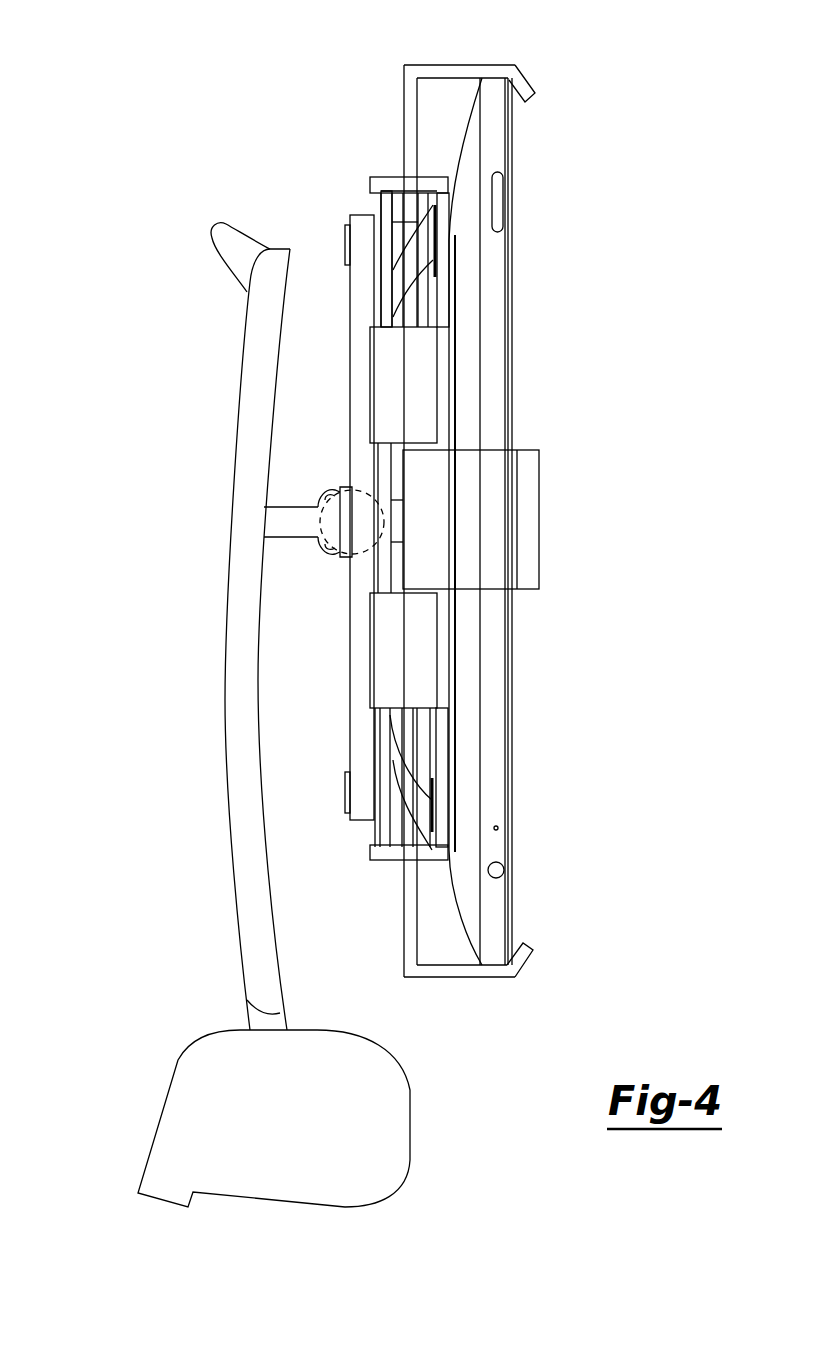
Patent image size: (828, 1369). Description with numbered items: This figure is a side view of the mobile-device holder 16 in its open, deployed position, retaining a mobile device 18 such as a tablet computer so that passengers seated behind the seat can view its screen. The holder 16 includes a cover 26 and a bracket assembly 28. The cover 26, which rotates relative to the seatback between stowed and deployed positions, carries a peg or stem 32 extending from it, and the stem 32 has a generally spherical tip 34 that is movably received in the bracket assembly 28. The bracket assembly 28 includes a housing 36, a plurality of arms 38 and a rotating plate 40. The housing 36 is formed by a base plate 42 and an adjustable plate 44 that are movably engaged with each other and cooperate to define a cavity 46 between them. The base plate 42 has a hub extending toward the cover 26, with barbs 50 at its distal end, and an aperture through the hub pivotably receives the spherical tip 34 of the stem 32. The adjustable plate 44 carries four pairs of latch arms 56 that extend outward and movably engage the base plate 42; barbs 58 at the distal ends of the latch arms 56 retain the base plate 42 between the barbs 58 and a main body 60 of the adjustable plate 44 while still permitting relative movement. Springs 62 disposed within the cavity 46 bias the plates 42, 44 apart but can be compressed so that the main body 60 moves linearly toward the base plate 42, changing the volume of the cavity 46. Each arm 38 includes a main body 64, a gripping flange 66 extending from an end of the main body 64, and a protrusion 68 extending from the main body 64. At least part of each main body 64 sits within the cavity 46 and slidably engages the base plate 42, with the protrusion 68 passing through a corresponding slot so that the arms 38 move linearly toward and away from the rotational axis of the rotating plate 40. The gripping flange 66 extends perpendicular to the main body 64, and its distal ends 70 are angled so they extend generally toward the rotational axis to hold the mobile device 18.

The mobile-device holder 16 is at (176, 116).
The mobile device 18 is at (490, 358).
The cover 26 is at (250, 393).
The bracket assembly 28 is at (346, 204).
The stem 32 is at (278, 528).
The spherical tip 34 is at (385, 562).
The housing 36 is at (458, 658).
The arms 38 is at (472, 61).
The rotating plate 40 is at (362, 238).
The base plate 42 is at (372, 294).
The adjustable plate 44 is at (458, 224).
The cavity 46 is at (427, 311).
The barbs 50 is at (335, 490).
The latch arms 56 is at (390, 177).
The barbs 58 is at (372, 184).
The main body 60 is at (440, 743).
The springs 62 is at (417, 262).
The main body 64 is at (403, 82).
The gripping flange 66 is at (450, 76).
The protrusion 68 is at (345, 252).
The distal ends 70 is at (533, 88).